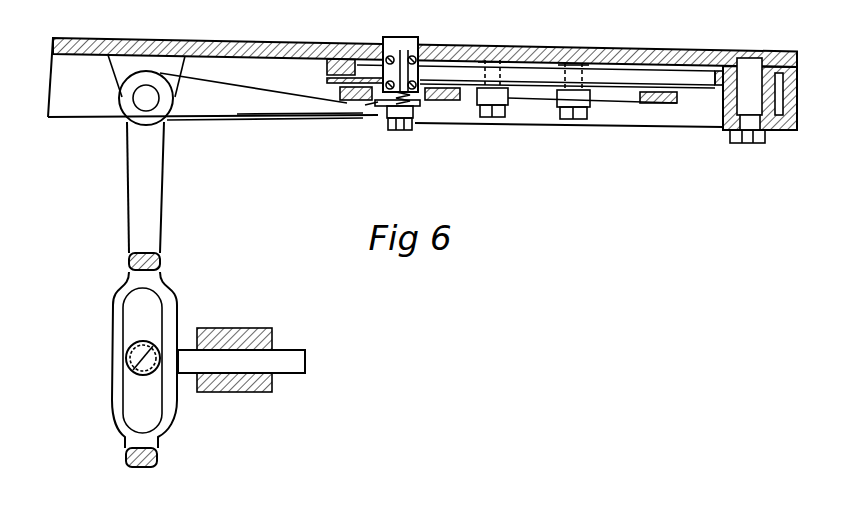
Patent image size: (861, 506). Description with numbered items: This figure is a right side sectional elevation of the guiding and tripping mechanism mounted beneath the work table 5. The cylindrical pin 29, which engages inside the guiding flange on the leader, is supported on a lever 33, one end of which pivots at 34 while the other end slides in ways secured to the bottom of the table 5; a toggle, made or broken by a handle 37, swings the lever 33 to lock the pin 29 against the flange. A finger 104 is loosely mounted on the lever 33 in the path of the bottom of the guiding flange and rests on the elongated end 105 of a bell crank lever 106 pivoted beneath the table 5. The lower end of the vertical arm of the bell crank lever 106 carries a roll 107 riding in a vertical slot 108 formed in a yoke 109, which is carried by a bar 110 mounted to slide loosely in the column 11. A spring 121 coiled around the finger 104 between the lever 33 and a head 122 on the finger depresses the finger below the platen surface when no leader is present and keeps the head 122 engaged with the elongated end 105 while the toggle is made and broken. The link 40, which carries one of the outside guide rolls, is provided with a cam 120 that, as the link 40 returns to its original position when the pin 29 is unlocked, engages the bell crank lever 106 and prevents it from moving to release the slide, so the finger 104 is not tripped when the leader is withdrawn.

The table 5 is at (657, 52).
The column 11 is at (272, 390).
The cylindrical pin 29 is at (385, 38).
The lever 33 is at (460, 65).
The pivot 34 is at (748, 62).
The handle 37 is at (604, 90).
The link 40 is at (340, 103).
The finger 104 is at (404, 52).
The elongated end 105 is at (399, 119).
The bell crank lever 106 is at (292, 120).
The roll 107 is at (135, 375).
The vertical slot 108 is at (158, 405).
The yoke 109 is at (178, 305).
The bar 110 is at (285, 360).
The cam 120 is at (362, 104).
The spring 121 is at (425, 103).
The head 122 is at (418, 108).